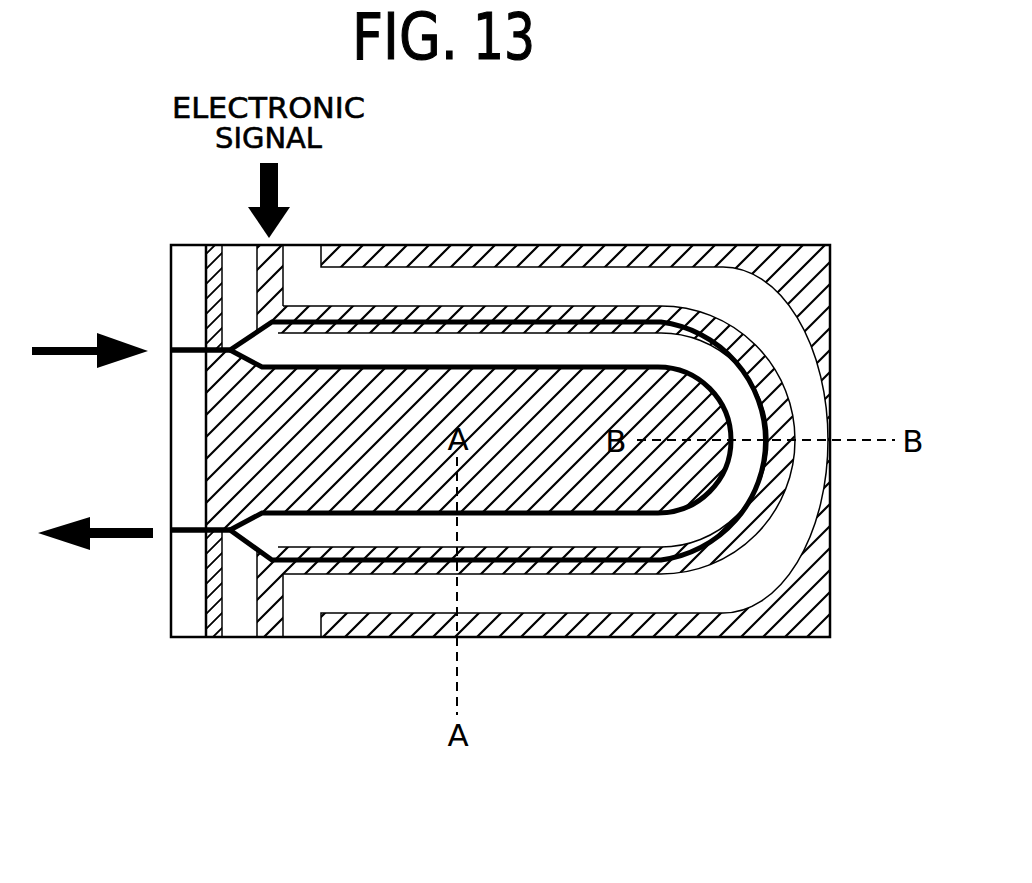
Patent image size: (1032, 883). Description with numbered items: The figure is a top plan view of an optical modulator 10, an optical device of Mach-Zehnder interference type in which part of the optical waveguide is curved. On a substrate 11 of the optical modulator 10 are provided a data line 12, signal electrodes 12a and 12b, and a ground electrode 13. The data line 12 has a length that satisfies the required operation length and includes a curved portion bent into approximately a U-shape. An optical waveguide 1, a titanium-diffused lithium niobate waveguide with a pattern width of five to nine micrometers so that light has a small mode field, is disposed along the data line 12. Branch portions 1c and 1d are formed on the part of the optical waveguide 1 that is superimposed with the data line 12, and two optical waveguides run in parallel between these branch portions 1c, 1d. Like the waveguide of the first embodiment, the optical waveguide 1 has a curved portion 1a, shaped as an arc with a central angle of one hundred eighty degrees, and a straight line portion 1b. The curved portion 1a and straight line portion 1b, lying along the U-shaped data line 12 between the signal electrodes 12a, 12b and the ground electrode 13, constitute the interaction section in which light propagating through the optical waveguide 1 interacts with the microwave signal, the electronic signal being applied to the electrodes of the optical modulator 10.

The optical modulator 10 is at (623, 198).
The substrate 11 is at (722, 247).
The data line 12 is at (466, 306).
The signal electrode 12a is at (280, 255).
The signal electrode 12b is at (273, 623).
The ground electrode 13 is at (592, 518).
The optical waveguide 1 is at (780, 378).
The curved portion 1a is at (693, 513).
The straight line portion 1b is at (396, 350).
The branch portion 1c is at (238, 366).
The branch portion 1d is at (238, 545).